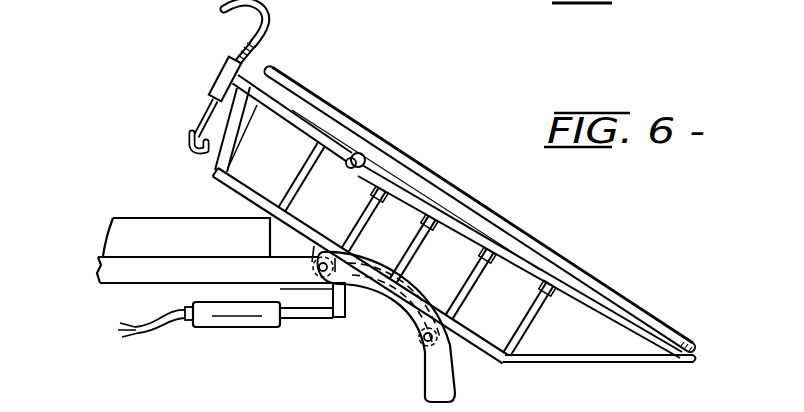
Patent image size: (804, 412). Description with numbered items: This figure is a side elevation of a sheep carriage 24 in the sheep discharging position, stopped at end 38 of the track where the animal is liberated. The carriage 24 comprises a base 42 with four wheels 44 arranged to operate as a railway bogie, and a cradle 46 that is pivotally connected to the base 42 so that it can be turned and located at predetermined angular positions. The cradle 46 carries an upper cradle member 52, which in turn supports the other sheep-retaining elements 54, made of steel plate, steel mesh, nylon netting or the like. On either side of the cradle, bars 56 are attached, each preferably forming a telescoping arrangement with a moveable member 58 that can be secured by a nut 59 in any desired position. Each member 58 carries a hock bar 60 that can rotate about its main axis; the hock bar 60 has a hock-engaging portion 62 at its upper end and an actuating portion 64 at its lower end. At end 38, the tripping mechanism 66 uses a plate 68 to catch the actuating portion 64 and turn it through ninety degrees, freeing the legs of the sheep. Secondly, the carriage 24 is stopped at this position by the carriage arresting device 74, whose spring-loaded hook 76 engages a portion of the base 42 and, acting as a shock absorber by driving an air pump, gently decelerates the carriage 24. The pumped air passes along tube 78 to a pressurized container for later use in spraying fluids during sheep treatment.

The sheep carriage 24 is at (454, 191).
The end of track 38 is at (453, 390).
The base 42 is at (411, 328).
The wheels 44 is at (428, 346).
The cradle 46 is at (440, 180).
The upper cradle member 52 is at (327, 107).
The sheep-retaining elements 54 is at (300, 172).
The bars 56 is at (400, 177).
The moveable member 58 is at (284, 110).
The nut 59 is at (367, 146).
The hock bar 60 is at (195, 77).
The hock-engaging portion 62 is at (226, 6).
The actuating portion 64 is at (198, 128).
The tripping mechanism 66 is at (207, 199).
The plate 68 is at (148, 221).
The carriage arresting device 74 is at (243, 316).
The spring-loaded hook 76 is at (328, 328).
The tube 78 is at (165, 323).